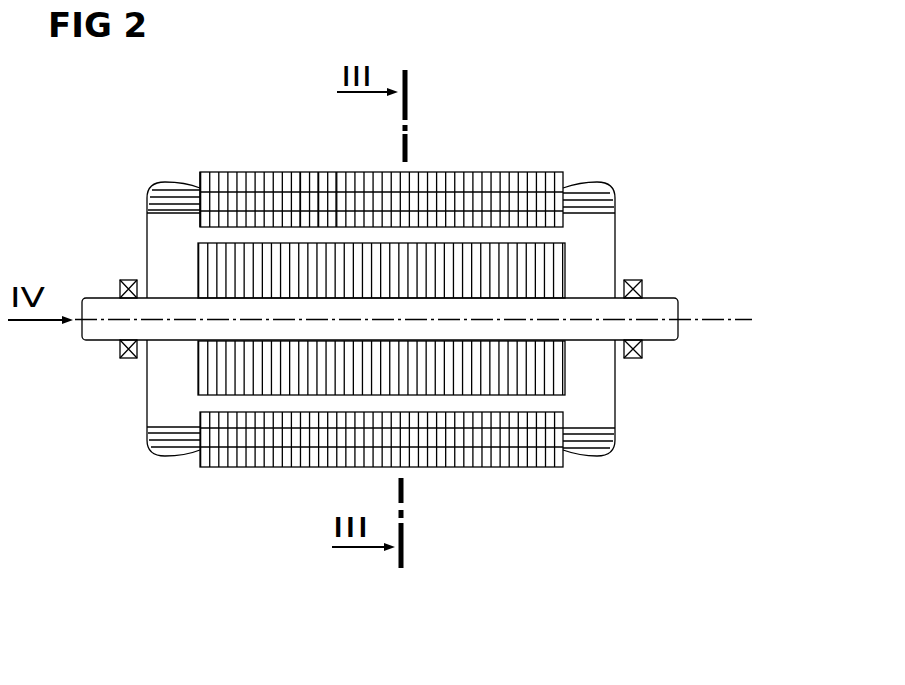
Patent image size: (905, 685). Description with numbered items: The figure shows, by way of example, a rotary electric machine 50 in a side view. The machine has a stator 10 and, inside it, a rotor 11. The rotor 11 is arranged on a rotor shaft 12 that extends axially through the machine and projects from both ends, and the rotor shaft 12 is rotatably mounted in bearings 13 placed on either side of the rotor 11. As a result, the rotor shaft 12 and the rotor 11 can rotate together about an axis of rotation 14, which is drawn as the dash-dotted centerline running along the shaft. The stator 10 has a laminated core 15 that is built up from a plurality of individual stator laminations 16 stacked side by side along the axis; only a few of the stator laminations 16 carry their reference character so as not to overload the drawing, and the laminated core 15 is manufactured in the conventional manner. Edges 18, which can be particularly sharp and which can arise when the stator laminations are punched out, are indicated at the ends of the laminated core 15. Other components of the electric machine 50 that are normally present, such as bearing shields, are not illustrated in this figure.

The stator 10 is at (451, 172).
The rotor 11 is at (498, 243).
The rotor shaft 12 is at (676, 297).
The bearings 13 is at (129, 279).
The axis of rotation 14 is at (741, 319).
The laminated core 15 is at (328, 172).
The stator laminations 16 is at (215, 172).
The edges 18 is at (578, 176).
The rotary electric machine 50 is at (545, 85).